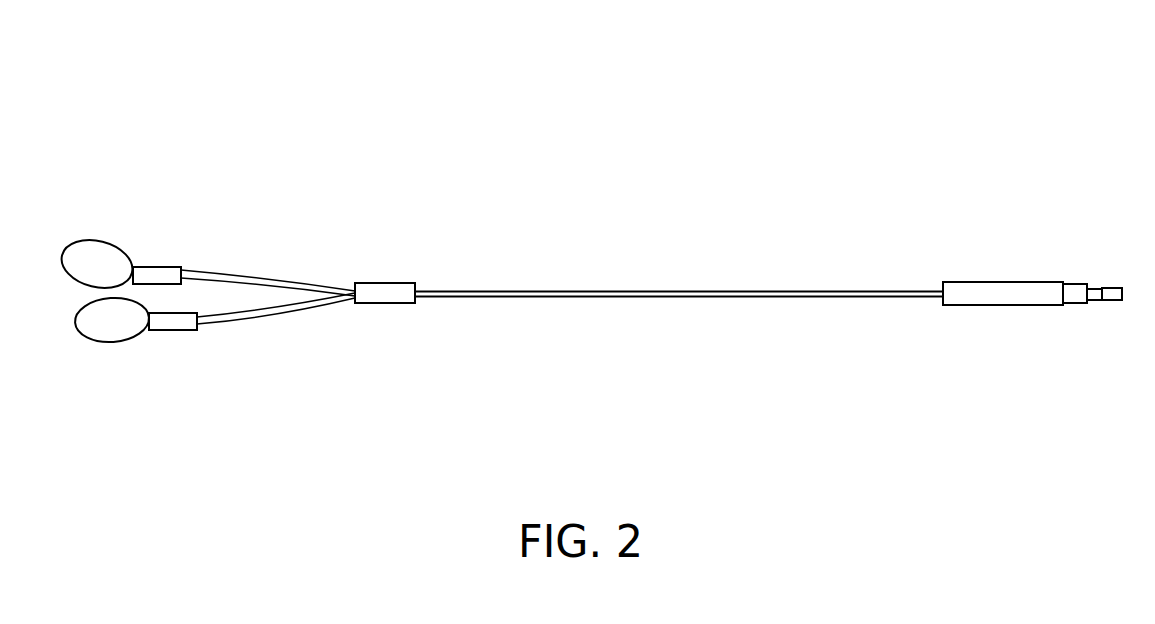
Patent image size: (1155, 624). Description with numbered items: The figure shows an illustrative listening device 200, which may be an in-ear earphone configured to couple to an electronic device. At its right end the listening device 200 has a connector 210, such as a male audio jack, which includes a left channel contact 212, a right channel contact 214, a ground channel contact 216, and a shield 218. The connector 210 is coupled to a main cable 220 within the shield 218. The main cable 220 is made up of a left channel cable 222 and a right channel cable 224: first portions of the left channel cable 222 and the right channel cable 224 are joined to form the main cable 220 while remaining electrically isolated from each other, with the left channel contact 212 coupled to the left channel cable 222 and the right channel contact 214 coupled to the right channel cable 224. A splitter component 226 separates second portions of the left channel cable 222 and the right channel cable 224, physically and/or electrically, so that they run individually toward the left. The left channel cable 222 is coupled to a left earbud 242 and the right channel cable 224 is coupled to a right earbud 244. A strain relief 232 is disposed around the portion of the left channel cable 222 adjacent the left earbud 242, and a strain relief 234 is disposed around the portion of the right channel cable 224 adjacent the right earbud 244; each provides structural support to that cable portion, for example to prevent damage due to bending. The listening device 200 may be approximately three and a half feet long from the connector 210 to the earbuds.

The listening device 200 is at (220, 140).
The connector 210 is at (1120, 275).
The left channel contact 212 is at (1113, 300).
The right channel contact 214 is at (1097, 300).
The ground channel contact 216 is at (1077, 300).
The shield 218 is at (980, 306).
The main cable 220 is at (763, 298).
The left channel cable 222 is at (247, 275).
The right channel cable 224 is at (273, 318).
The splitter component 226 is at (408, 285).
The strain relief 232 is at (168, 265).
The strain relief 234 is at (186, 323).
The left earbud 242 is at (93, 248).
The right earbud 244 is at (103, 330).